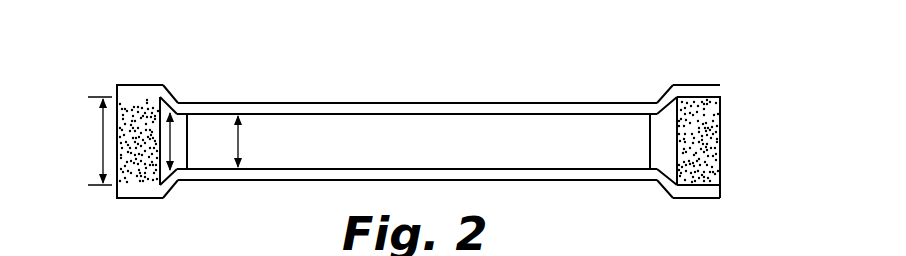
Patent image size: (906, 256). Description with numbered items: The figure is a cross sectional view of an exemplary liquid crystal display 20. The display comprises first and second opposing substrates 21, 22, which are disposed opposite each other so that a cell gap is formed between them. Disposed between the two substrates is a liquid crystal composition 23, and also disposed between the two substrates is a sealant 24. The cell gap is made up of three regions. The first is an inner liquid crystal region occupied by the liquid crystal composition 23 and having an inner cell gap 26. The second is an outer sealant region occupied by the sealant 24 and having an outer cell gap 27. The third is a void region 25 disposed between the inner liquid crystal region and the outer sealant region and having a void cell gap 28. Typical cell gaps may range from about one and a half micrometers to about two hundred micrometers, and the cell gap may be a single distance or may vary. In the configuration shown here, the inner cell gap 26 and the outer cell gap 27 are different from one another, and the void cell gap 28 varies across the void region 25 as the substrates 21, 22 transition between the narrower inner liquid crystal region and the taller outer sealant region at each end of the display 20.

The liquid crystal display 20 is at (579, 68).
The first substrate 21 is at (708, 90).
The second substrate 22 is at (713, 193).
The liquid crystal composition 23 is at (465, 128).
The sealant 24 is at (713, 138).
The void region 25 is at (668, 128).
The inner cell gap 26 is at (240, 140).
The outer cell gap 27 is at (103, 143).
The void cell gap 28 is at (173, 140).